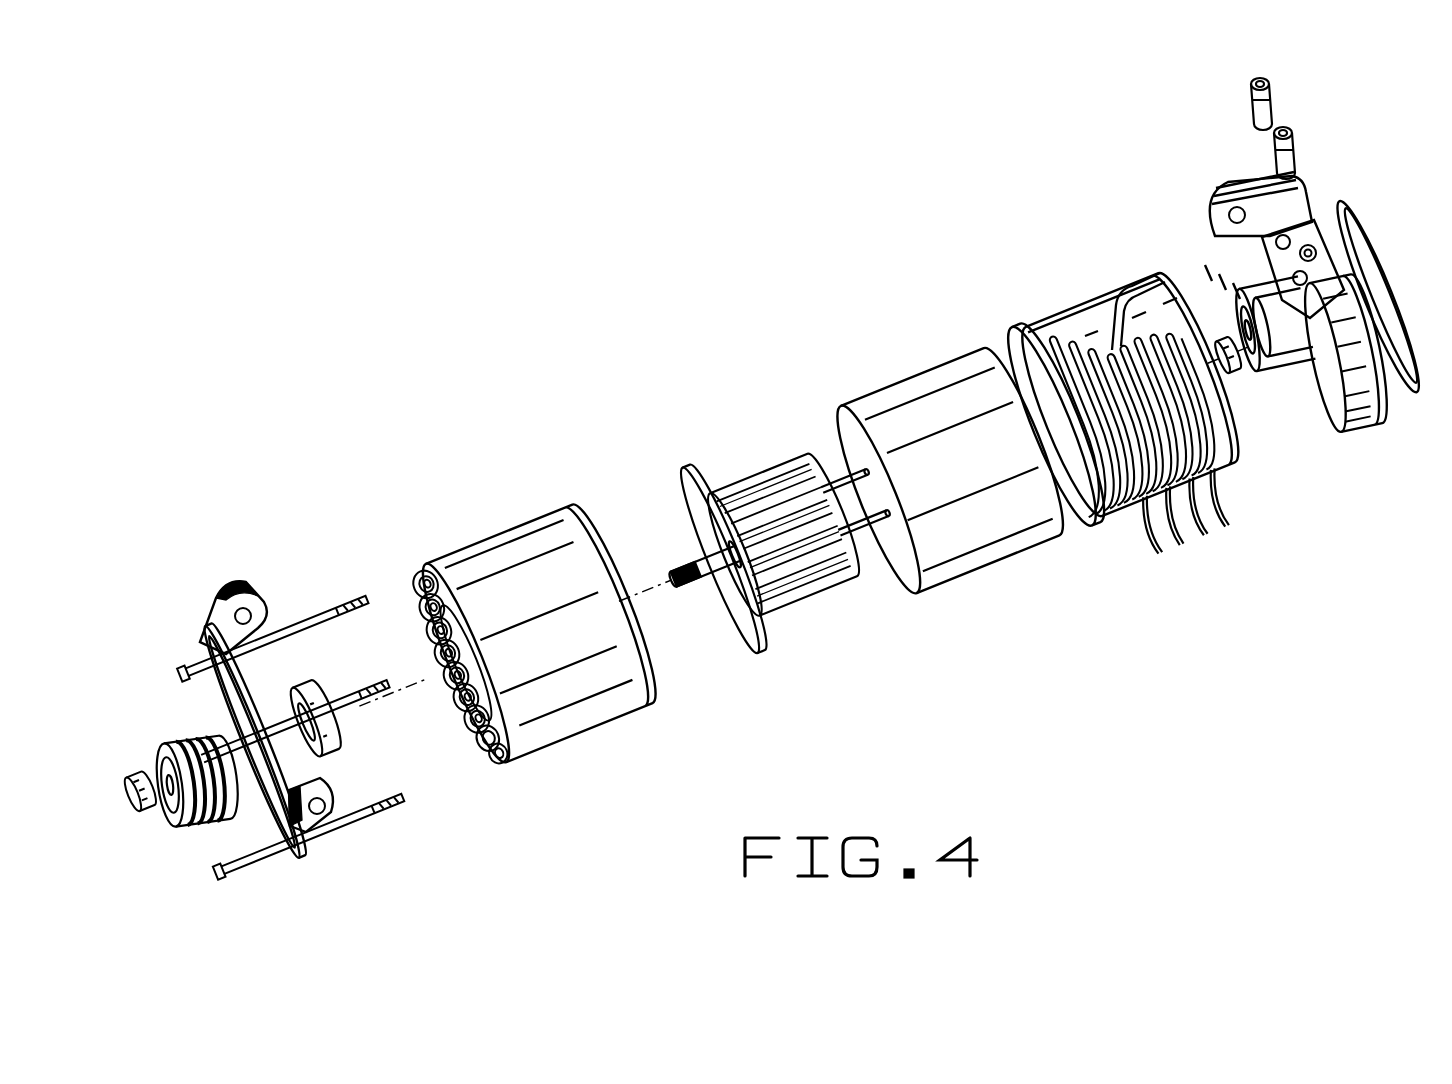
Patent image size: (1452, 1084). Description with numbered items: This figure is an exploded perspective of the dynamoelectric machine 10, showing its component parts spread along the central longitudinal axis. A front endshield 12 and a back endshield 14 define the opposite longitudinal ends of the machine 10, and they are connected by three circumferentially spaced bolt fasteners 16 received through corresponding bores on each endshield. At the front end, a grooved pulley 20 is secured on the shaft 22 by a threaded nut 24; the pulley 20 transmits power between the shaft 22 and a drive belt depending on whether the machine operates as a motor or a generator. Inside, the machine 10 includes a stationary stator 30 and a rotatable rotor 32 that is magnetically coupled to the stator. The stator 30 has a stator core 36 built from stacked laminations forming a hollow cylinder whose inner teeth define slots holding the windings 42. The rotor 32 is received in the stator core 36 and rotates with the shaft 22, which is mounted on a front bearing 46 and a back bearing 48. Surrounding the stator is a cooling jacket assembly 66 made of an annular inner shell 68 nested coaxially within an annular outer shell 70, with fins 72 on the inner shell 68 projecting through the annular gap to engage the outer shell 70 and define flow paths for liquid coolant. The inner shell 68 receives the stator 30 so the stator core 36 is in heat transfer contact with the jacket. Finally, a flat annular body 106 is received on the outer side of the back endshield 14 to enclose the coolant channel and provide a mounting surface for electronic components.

The dynamoelectric machine 10 is at (702, 402).
The front endshield 12 is at (206, 648).
The back endshield 14 is at (1253, 178).
The bolt fasteners 16 is at (297, 698).
The grooved pulley 20 is at (188, 735).
The shaft 22 is at (695, 578).
The threaded nut 24 is at (140, 772).
The stator 30 is at (452, 545).
The rotor 32 is at (749, 470).
The stator core 36 is at (520, 528).
The windings 42 is at (428, 590).
The front bearing 46 is at (282, 690).
The back bearing 48 is at (1218, 340).
The cooling jacket assembly 66 is at (1019, 325).
The inner shell 68 is at (1104, 312).
The outer shell 70 is at (913, 372).
The fins 72 is at (1205, 522).
The flat annular body 106 is at (1357, 215).